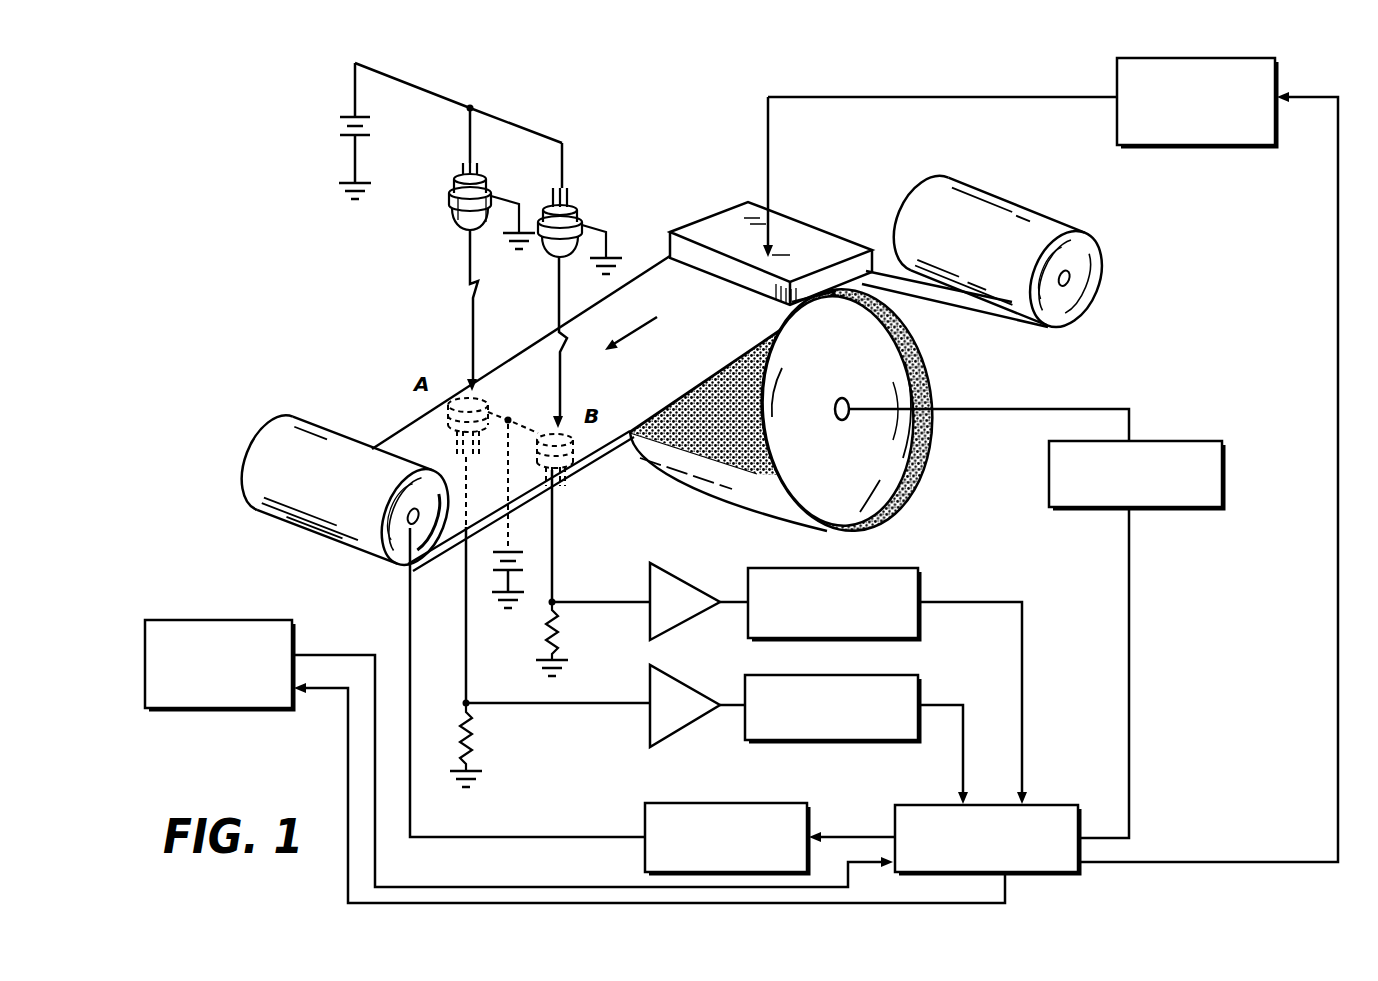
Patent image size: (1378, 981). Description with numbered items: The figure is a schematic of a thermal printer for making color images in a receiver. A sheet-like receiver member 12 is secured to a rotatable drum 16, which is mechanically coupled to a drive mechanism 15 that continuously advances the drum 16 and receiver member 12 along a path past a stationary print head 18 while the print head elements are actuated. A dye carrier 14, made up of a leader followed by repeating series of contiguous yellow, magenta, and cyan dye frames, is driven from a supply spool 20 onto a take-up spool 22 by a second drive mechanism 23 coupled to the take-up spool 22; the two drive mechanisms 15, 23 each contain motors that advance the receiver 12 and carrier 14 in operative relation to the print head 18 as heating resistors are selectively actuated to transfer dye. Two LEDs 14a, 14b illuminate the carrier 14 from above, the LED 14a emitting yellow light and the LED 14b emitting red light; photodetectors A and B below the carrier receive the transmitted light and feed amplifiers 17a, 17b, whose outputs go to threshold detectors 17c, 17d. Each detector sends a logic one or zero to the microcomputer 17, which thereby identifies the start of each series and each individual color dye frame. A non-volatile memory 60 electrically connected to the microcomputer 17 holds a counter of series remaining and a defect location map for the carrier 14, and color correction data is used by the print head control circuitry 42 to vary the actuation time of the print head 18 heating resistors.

The receiver member 12 is at (890, 497).
The carrier 14 is at (528, 347).
The LED 14a is at (453, 180).
The LED 14b is at (583, 208).
The drive mechanism 15 is at (1198, 441).
The rotatable drum 16 is at (862, 356).
The microcomputer 17 is at (1052, 805).
The amplifier 17a is at (690, 690).
The amplifier 17b is at (688, 576).
The threshold detector 17c is at (918, 694).
The threshold detector 17d is at (918, 585).
The print head 18 is at (804, 222).
The supply spool 20 is at (1100, 277).
The take-up spool 22 is at (337, 546).
The drive mechanism 23 is at (775, 803).
The print head control circuitry 42 is at (1276, 73).
The non-volatile memory 60 is at (175, 620).